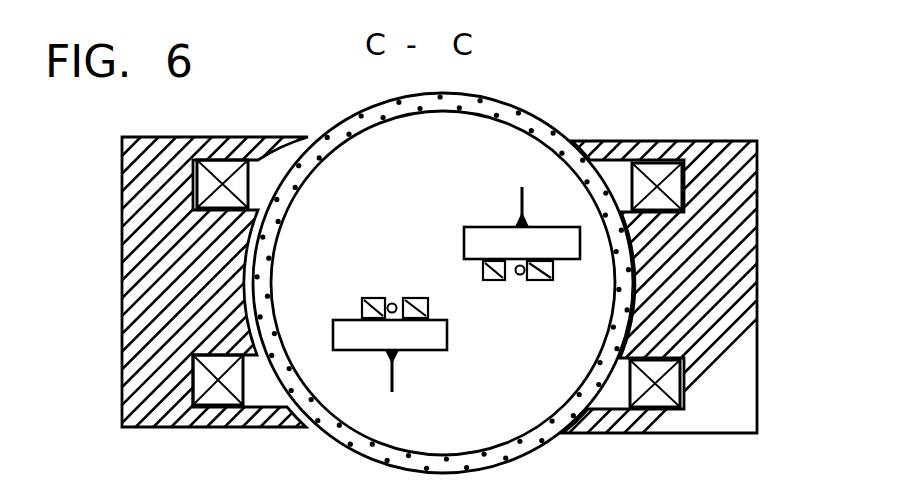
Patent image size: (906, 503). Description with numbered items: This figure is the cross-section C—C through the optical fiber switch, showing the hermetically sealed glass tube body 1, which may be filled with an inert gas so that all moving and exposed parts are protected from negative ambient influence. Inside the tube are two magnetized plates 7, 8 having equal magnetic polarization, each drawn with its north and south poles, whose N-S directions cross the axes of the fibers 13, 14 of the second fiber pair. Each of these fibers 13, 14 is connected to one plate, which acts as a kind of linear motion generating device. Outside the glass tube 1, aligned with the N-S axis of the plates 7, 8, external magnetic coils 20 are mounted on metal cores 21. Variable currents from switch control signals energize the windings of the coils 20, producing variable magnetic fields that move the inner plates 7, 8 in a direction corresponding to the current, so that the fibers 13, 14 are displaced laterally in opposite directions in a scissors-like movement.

The glass tube body 1 is at (495, 100).
The magnetized plate 7 is at (360, 340).
The magnetized plate 8 is at (553, 227).
The fiber of the second pair 13 is at (520, 275).
The fiber of the second pair 14 is at (393, 303).
The external magnetic coil 20 is at (650, 180).
The metal core 21 is at (723, 140).